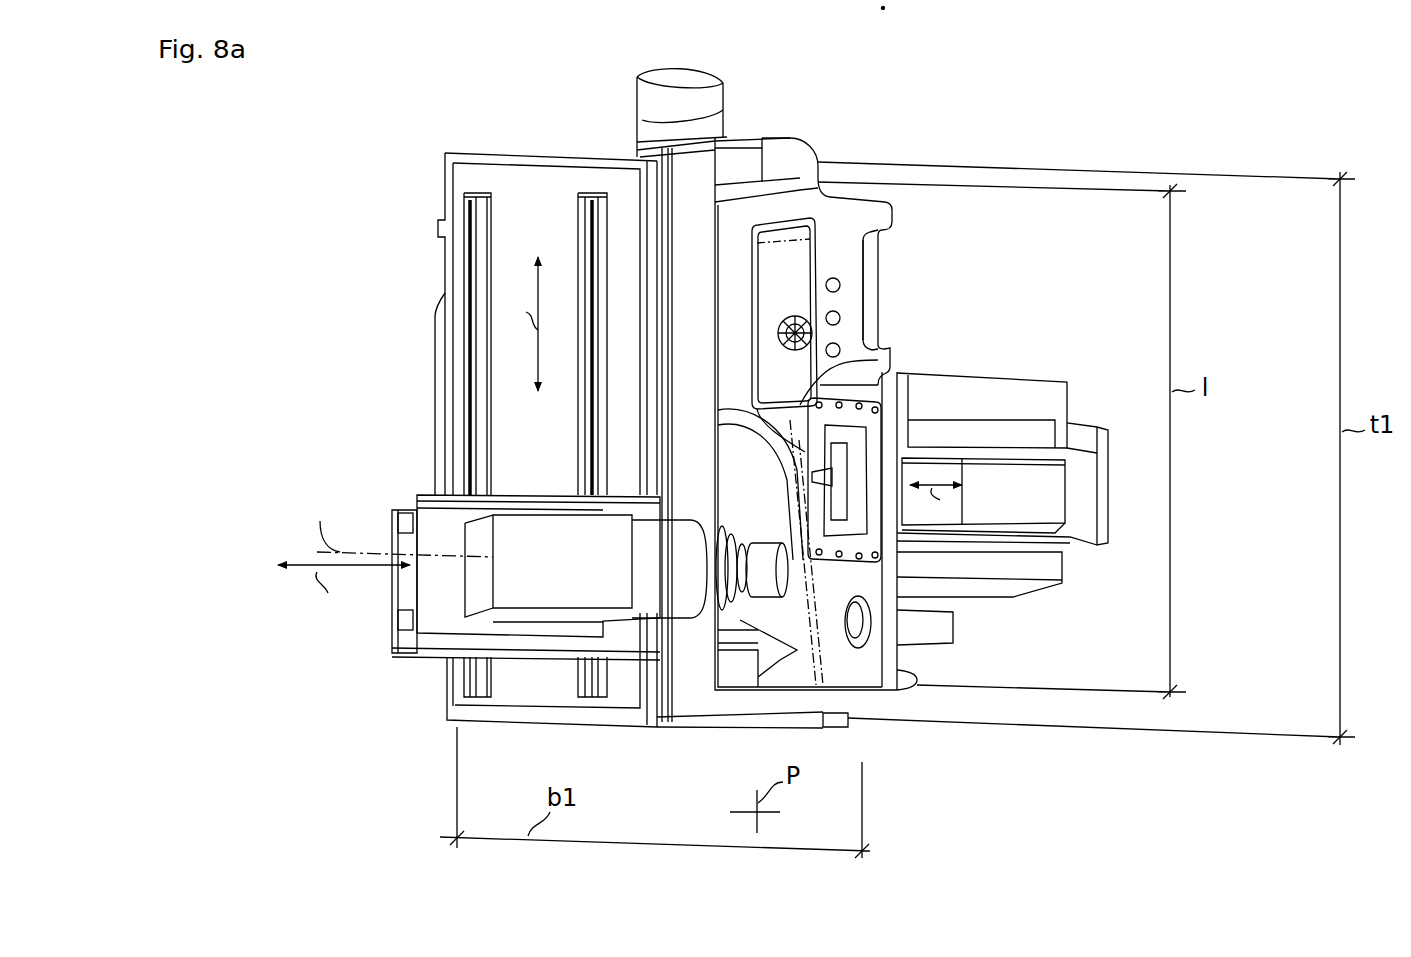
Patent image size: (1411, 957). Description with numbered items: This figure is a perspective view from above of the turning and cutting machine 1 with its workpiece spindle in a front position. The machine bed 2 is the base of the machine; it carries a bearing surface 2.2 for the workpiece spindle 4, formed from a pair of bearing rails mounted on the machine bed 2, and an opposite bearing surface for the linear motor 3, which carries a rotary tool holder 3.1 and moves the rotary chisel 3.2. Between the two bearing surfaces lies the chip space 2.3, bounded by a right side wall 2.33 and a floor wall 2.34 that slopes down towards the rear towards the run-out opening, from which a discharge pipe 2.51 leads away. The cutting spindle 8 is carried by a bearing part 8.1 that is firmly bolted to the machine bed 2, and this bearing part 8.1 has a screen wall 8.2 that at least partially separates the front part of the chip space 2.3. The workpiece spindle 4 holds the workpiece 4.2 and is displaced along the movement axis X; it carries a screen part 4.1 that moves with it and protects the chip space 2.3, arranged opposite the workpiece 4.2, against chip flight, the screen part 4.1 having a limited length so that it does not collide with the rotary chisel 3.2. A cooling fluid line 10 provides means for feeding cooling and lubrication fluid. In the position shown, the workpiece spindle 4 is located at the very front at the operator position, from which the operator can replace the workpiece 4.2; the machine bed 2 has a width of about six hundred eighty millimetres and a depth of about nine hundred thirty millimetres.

The turning and cutting machine 1 is at (284, 160).
The machine bed 2 is at (436, 228).
The bearing surface 2.2 is at (478, 228).
The discharge pipe 2.51 is at (657, 91).
The chip space 2.3 is at (740, 247).
The right side wall 2.33 is at (803, 190).
The floor wall 2.34 is at (733, 490).
The cutting spindle 8 is at (801, 320).
The bearing part 8.1 is at (870, 254).
The screen wall 8.2 is at (822, 392).
The linear motor 3 is at (1002, 504).
The rotary tool holder 3.1 is at (818, 478).
The rotary chisel 3.2 is at (808, 482).
The workpiece spindle 4 is at (540, 567).
The screen part 4.1 is at (806, 625).
The workpiece 4.2 is at (770, 551).
The cooling fluid line 10 is at (928, 630).